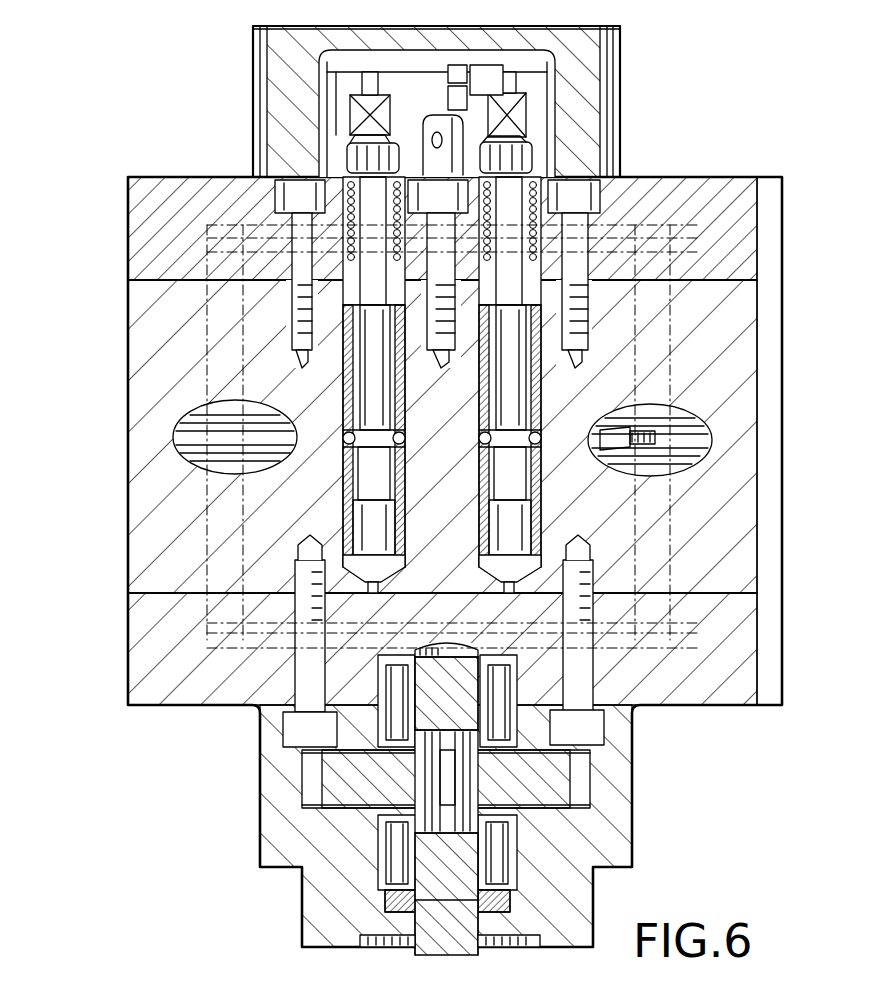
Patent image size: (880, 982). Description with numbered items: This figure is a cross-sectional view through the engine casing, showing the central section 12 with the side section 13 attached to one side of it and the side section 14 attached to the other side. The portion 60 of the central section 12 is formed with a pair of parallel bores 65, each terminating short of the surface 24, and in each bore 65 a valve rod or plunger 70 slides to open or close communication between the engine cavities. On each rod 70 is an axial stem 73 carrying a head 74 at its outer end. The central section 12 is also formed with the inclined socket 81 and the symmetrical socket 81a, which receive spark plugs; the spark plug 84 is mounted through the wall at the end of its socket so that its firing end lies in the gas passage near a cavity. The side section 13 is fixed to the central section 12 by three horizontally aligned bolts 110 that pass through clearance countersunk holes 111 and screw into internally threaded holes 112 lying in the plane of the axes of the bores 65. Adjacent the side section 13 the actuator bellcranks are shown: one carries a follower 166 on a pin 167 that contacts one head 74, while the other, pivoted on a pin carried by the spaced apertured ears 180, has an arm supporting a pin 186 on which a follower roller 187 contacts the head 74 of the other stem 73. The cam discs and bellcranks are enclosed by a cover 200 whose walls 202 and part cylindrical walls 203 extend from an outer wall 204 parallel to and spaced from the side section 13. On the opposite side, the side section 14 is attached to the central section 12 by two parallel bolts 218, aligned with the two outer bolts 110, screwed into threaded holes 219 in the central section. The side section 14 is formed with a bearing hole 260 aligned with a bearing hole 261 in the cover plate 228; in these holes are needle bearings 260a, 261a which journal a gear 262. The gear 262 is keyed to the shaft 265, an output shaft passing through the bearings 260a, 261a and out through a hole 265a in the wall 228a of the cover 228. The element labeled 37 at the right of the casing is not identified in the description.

The central section 12 is at (122, 511).
The side section 13 is at (720, 157).
The side section 14 is at (720, 715).
The surface 24 is at (172, 597).
The side plate 37 is at (782, 307).
The portion 60 is at (448, 453).
The bores 65 is at (357, 396).
The valve rod 70 is at (340, 477).
The axial stem 73 is at (365, 180).
The head 74 is at (380, 147).
The socket 81 is at (706, 447).
The socket 81a is at (194, 438).
The spark plug 84 is at (660, 405).
The bolts 110 is at (426, 270).
The clearance countersunk holes 111 is at (292, 232).
The internally threaded holes 112 is at (296, 318).
The follower 166 is at (376, 102).
The pin 167 is at (350, 110).
The ears 180 is at (445, 117).
The pin 186 is at (522, 115).
The follower roller 187 is at (527, 96).
The cover 200 is at (391, 101).
The walls 202 is at (292, 107).
The part cylindrical walls 203 is at (262, 84).
The outer wall 204 is at (412, 33).
The bolts 218 is at (300, 662).
The screw threaded holes 219 is at (305, 562).
The cover plate 228 is at (625, 878).
The wall 228a is at (380, 942).
The bearing hole 260 is at (393, 702).
The needle bearing 260a is at (497, 702).
The bearing hole 261 is at (500, 852).
The needle bearing 261a is at (500, 835).
The gear 262 is at (590, 778).
The shaft 265 is at (462, 955).
The hole 265a is at (430, 920).